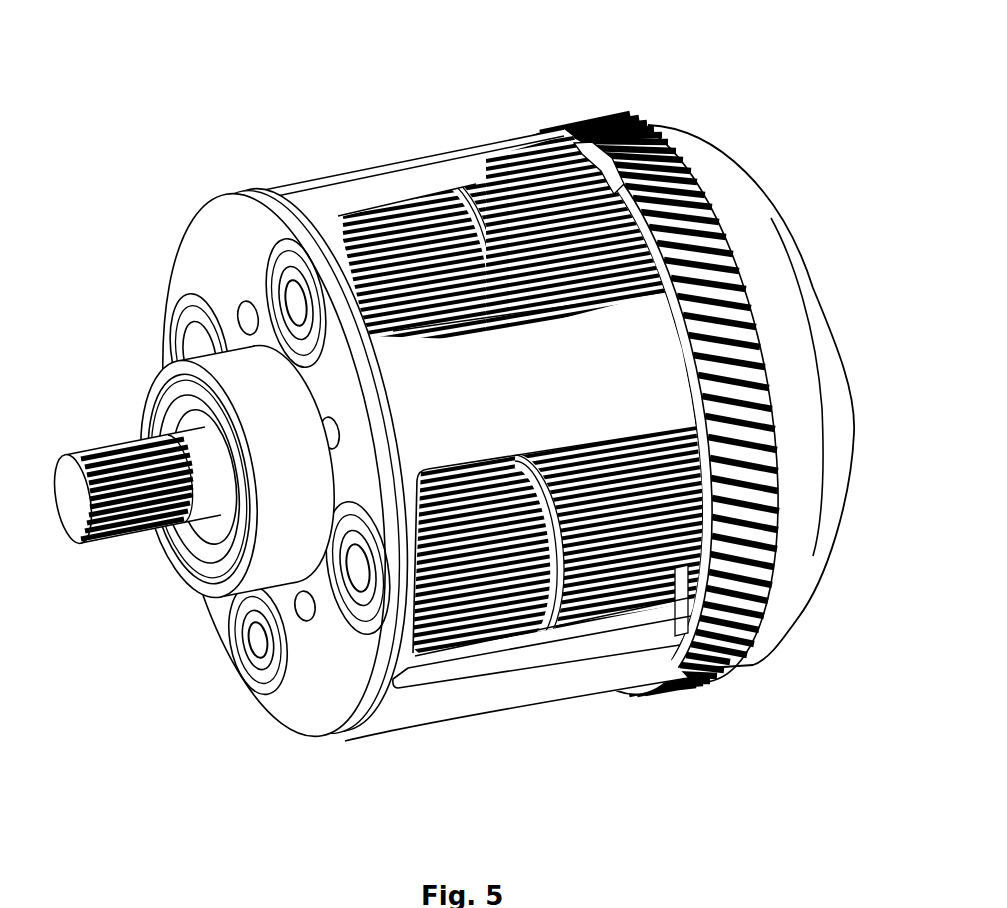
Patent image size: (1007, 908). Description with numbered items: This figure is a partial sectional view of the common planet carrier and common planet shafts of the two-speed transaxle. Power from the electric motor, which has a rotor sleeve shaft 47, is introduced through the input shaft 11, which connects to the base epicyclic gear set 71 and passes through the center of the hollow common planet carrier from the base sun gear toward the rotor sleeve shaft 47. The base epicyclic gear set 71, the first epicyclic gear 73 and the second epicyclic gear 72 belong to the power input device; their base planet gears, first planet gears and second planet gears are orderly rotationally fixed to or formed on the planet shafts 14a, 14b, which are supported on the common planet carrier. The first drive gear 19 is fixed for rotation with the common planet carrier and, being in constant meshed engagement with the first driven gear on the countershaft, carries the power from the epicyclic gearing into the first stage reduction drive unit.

The input shaft 11 is at (136, 416).
The planet shafts 14a is at (228, 190).
The second carrier plate 14b is at (270, 703).
The first drive gear 19 is at (628, 115).
The rotor shaft 47 is at (333, 680).
The base epicyclic gear set 71 is at (392, 200).
The second epicyclic gear 72 is at (497, 160).
The first epicyclic gear 73 is at (553, 128).